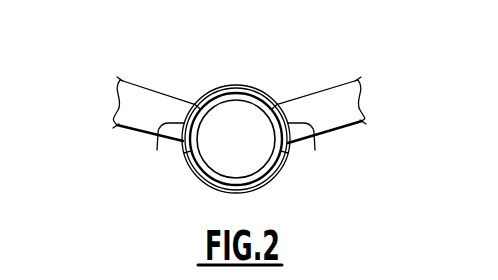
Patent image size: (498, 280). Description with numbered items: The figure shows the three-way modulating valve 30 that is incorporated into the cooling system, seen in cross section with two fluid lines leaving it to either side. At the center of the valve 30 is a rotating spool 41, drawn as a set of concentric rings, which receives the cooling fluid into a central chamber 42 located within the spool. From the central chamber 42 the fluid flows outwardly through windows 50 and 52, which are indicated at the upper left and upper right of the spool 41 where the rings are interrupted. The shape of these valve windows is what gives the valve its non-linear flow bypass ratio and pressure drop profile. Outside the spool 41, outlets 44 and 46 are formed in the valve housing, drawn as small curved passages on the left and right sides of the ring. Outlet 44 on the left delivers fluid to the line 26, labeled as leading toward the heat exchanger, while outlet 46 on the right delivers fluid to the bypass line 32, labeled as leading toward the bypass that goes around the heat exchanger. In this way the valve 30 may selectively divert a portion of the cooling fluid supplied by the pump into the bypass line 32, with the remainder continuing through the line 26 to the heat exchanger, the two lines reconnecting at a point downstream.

The line 26 is at (140, 97).
The three-way modulating valve 30 is at (151, 192).
The bypass line 32 is at (337, 97).
The rotating spool 41 is at (209, 186).
The central chamber 42 is at (250, 152).
The outlet 44 is at (157, 150).
The outlet 46 is at (315, 150).
The window 50 is at (195, 103).
The window 52 is at (279, 103).